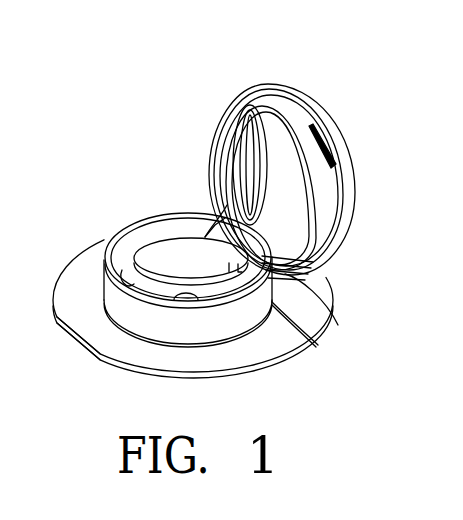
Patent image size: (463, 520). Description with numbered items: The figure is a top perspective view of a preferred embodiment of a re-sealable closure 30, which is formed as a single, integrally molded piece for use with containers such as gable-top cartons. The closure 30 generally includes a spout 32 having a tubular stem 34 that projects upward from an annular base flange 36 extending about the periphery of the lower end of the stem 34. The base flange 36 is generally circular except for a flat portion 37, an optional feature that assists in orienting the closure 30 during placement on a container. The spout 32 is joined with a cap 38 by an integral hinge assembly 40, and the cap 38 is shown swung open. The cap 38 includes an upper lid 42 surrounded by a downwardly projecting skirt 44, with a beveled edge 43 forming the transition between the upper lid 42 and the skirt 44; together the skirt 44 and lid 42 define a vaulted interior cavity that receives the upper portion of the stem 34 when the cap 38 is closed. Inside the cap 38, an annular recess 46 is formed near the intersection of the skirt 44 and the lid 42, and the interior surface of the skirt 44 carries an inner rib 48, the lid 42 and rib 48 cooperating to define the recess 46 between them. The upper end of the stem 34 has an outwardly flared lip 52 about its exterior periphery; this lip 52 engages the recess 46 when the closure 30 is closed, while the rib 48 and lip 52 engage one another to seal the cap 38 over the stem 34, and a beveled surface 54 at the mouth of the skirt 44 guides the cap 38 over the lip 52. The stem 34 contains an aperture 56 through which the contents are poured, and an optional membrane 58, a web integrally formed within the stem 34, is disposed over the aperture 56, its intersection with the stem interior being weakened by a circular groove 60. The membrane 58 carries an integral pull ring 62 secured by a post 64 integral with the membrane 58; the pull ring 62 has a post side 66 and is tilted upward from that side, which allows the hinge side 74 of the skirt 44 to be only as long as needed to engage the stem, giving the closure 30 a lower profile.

The re-sealable closure 30 is at (305, 393).
The spout 32 is at (90, 220).
The stem 34 is at (308, 338).
The annular base flange 36 is at (285, 331).
The flat portion 37 is at (83, 352).
The cap 38 is at (320, 72).
The integral hinge assembly 40 is at (332, 315).
The upper lid 42 is at (347, 230).
The beveled edge 43 is at (354, 170).
The skirt 44 is at (326, 164).
The annular recess 46 is at (256, 133).
The inner rib 48 is at (245, 170).
The outwardly flared lip 52 is at (112, 243).
The beveled surface 54 is at (240, 113).
The aperture 56 is at (143, 183).
The membrane 58 is at (191, 269).
The circular groove 60 is at (127, 290).
The pull ring 62 is at (137, 230).
The post 64 is at (190, 235).
The post side 66 is at (205, 237).
The hinge side 74 is at (330, 265).